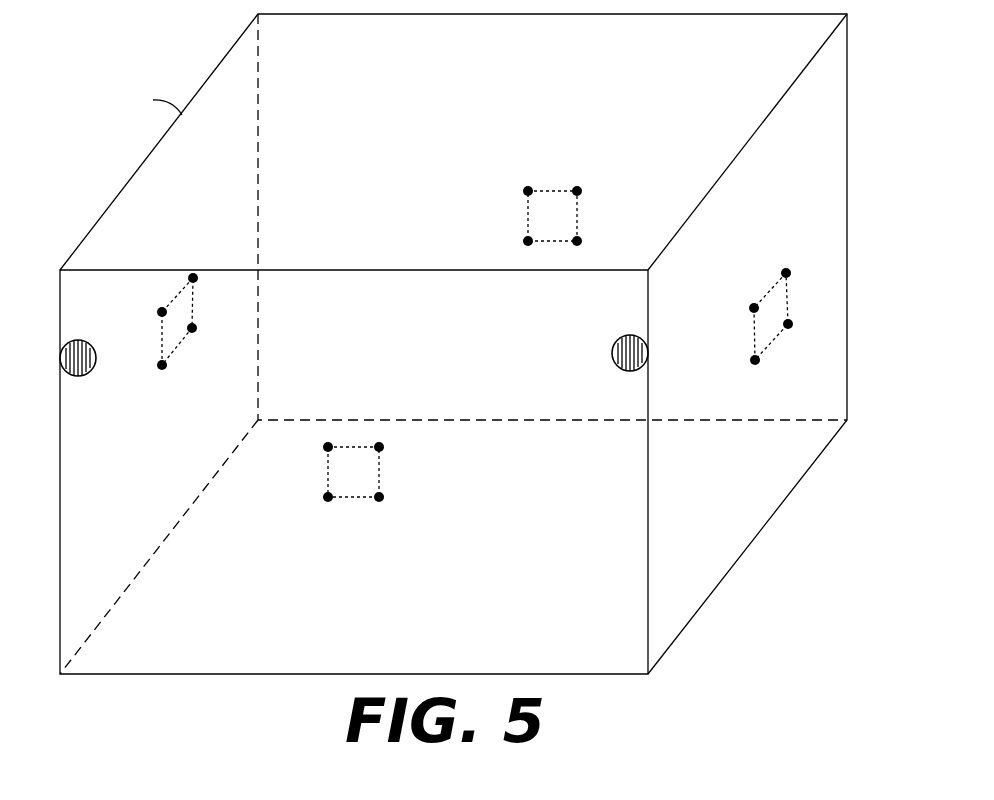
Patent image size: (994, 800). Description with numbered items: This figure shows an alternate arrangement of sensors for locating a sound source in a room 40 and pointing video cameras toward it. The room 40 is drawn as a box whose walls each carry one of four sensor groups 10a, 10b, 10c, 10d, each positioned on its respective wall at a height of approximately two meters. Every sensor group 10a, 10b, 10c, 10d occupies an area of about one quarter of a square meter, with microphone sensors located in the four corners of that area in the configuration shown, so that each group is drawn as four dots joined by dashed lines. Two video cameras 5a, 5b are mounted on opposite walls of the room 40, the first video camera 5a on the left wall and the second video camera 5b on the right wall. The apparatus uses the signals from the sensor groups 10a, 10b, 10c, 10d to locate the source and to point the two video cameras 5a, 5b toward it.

The room 40 is at (828, 127).
The sensor group 10a is at (379, 487).
The sensor group 10b is at (194, 313).
The sensor group 10c is at (528, 215).
The sensor group 10d is at (773, 289).
The video camera 5a is at (80, 377).
The video camera 5b is at (611, 353).